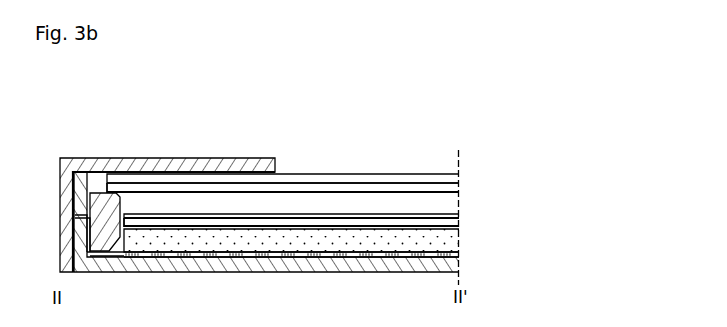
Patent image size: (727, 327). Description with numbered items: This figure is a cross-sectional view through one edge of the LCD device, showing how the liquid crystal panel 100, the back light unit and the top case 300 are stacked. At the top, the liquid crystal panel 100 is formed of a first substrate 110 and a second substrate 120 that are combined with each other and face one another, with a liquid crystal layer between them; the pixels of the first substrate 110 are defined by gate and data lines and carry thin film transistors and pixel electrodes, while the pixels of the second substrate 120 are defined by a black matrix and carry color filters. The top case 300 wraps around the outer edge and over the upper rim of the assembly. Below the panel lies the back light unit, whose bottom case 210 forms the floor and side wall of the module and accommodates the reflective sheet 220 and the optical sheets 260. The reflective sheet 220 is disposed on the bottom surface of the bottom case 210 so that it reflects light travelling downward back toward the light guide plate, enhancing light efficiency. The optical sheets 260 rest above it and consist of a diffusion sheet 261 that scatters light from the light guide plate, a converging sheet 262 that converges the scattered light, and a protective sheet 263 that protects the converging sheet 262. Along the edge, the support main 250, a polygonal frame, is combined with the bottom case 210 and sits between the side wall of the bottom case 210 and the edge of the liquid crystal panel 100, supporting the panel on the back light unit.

The liquid crystal panel 100 is at (283, 140).
The first substrate 110 is at (350, 190).
The second substrate 120 is at (302, 181).
The bottom case 210 is at (197, 265).
The reflective sheet 220 is at (347, 257).
The support main 250 is at (99, 250).
The optical sheets 260 is at (341, 226).
The diffusion sheet 261 is at (454, 237).
The converging sheet 262 is at (460, 223).
The protective sheet 263 is at (450, 215).
The top case 300 is at (147, 161).